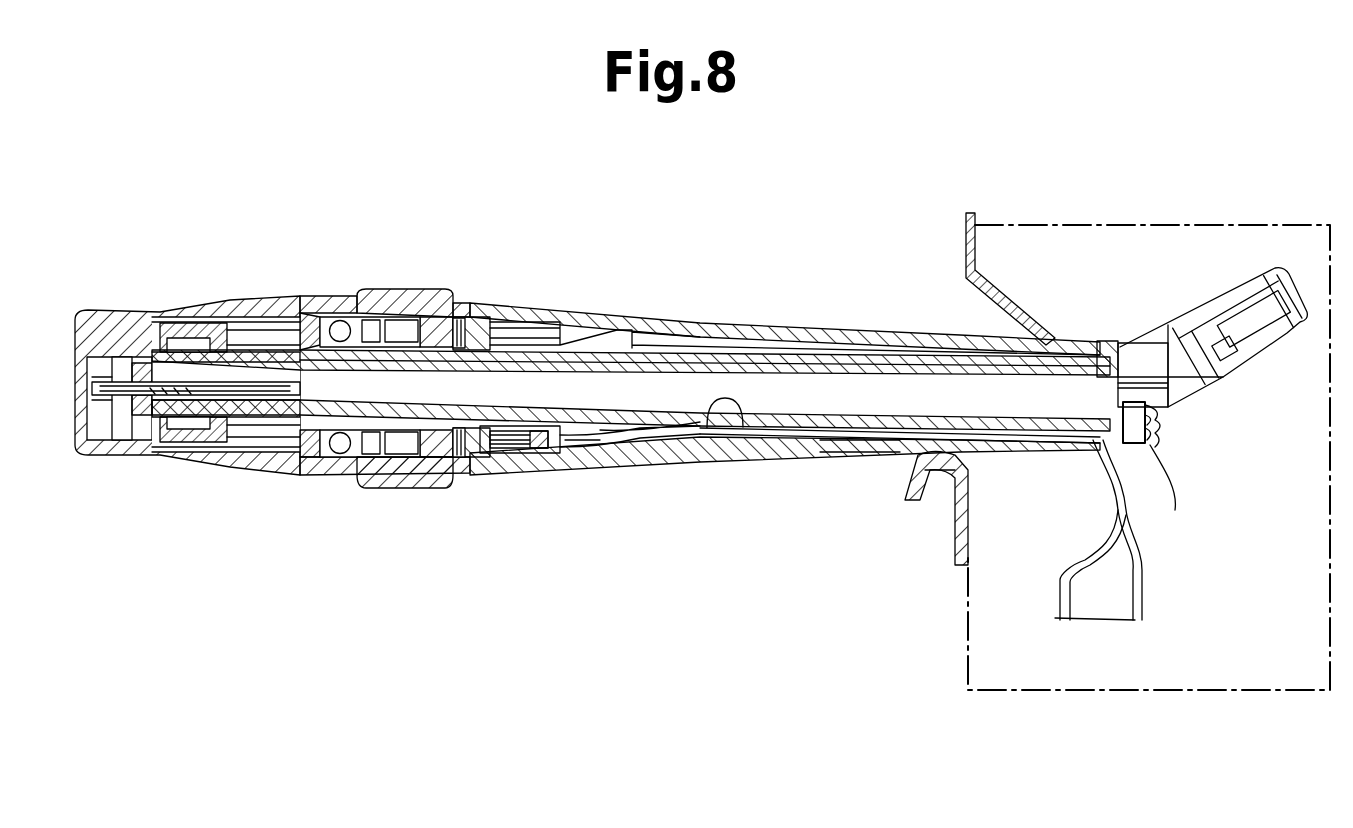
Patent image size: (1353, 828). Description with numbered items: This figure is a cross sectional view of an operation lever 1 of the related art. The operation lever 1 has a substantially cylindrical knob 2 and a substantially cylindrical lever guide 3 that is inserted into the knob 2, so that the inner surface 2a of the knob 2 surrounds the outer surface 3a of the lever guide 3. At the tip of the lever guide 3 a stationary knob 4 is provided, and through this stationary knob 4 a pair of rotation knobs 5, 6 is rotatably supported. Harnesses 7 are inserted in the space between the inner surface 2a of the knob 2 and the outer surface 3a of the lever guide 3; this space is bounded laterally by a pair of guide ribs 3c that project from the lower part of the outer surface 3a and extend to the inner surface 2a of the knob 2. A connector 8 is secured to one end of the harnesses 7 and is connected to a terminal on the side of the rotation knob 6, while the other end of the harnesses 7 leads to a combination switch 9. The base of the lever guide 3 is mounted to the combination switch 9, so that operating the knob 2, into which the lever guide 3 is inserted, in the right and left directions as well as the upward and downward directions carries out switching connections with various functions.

The operation lever 1 is at (795, 480).
The knob 2 is at (601, 308).
The inner surface of the knob 2a is at (730, 462).
The lever guide 3 is at (812, 322).
The outer surface of the lever guide 3a is at (855, 465).
The guide ribs 3c is at (1132, 462).
The stationary knob 4 is at (312, 295).
The rotation knob 5 is at (137, 297).
The rotation knob 6 is at (420, 287).
The harnesses 7 is at (600, 454).
The connector 8 is at (548, 454).
The combination switch 9 is at (1113, 225).